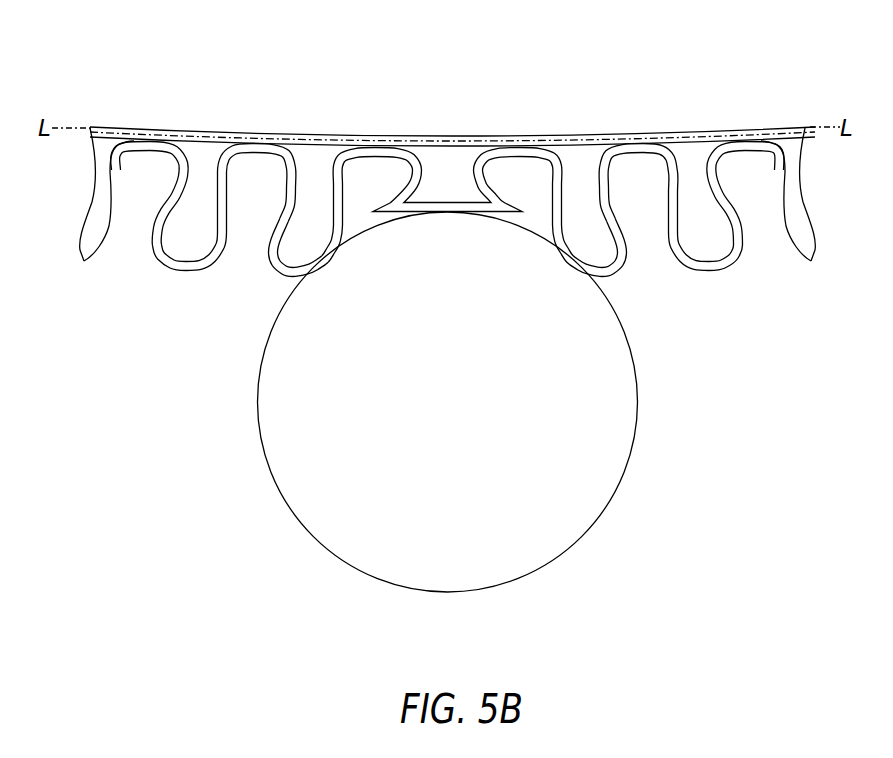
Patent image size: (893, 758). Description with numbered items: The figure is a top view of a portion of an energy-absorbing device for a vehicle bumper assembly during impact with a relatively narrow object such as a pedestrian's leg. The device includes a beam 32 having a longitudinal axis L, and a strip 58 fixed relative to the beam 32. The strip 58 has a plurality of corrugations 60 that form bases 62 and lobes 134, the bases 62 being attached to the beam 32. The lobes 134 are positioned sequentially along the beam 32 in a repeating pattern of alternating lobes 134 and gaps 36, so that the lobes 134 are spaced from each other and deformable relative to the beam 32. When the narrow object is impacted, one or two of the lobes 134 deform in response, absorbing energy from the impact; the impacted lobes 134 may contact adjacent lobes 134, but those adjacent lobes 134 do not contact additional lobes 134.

The beam 32 is at (600, 134).
The gaps 36 is at (204, 163).
The strip 58 is at (705, 274).
The corrugations 60 is at (206, 289).
The bases 62 is at (155, 133).
The lobes 134 is at (273, 276).